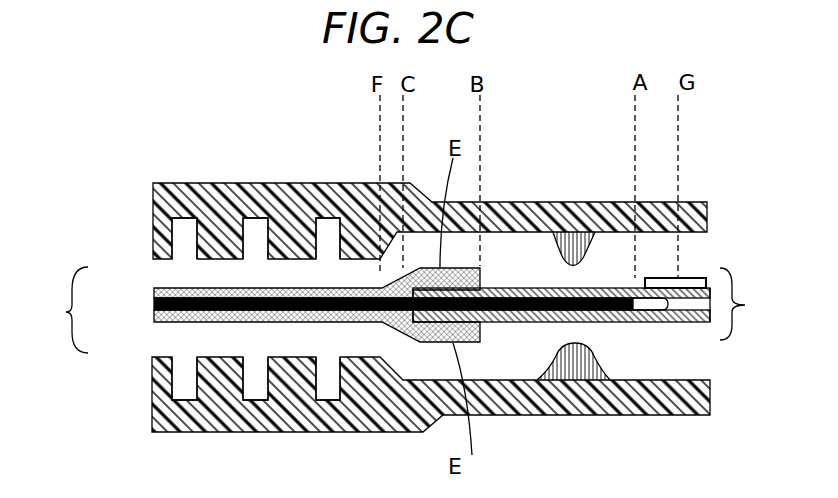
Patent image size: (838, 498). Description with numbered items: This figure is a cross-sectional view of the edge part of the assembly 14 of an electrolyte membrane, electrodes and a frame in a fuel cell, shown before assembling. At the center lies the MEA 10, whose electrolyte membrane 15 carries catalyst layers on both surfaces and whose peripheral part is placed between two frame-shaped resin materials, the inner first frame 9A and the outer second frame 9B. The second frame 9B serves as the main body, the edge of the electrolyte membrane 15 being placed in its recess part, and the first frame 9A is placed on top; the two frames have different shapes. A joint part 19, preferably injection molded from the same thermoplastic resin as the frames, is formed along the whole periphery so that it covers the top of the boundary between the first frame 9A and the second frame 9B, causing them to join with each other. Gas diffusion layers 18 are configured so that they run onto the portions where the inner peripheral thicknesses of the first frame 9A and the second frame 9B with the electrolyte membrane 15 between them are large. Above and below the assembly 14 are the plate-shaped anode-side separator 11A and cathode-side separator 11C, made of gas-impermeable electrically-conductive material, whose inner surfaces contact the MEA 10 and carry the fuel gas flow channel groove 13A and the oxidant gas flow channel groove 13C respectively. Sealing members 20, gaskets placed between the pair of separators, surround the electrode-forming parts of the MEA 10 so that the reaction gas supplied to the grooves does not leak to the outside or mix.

The first frame 9A is at (498, 290).
The second frame 9B is at (497, 322).
The MEA 10 is at (68, 313).
The anode-side separator 11A is at (335, 432).
The cathode-side separator 11C is at (349, 183).
The fuel gas flow channel groove 13A is at (189, 373).
The oxidant gas flow channel groove 13C is at (183, 235).
The assembly 14 is at (747, 304).
The electrolyte membrane 15 is at (156, 312).
The gas diffusion layer 18 is at (156, 290).
The joint part 19 is at (667, 278).
The sealing member 20 is at (586, 232).